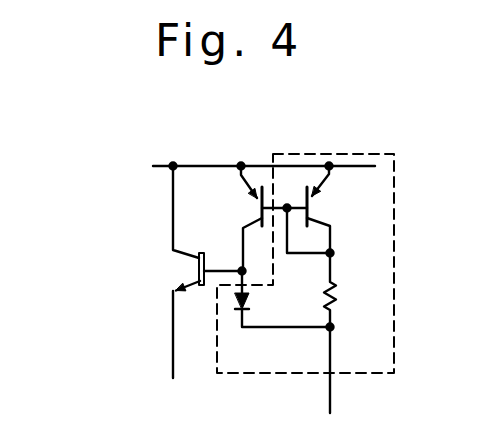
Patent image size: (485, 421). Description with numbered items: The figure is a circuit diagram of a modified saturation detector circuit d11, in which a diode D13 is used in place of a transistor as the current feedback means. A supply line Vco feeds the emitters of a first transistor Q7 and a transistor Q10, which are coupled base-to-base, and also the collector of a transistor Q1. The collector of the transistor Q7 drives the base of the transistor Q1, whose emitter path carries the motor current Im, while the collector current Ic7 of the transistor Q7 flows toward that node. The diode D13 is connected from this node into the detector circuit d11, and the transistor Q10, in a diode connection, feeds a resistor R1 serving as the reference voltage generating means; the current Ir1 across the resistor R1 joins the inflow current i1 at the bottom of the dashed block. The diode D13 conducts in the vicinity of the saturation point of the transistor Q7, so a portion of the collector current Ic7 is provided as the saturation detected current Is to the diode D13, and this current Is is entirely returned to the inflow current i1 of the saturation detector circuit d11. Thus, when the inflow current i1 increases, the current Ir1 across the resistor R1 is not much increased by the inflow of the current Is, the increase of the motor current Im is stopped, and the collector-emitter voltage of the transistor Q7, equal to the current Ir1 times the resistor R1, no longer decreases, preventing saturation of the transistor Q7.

The supply voltage Vco is at (238, 168).
The transistor Q1 is at (194, 272).
The first transistor Q7 is at (255, 218).
The transistor Q10 is at (324, 211).
The resistor R1 is at (317, 333).
The diode D13 is at (282, 299).
The saturation detector circuit d11 is at (333, 153).
The collector current Ic7 is at (230, 252).
The current across resistor R1 Ir1 is at (347, 280).
The motor current Im is at (162, 337).
The saturation detected current Is is at (299, 337).
The inflow current i1 is at (322, 392).